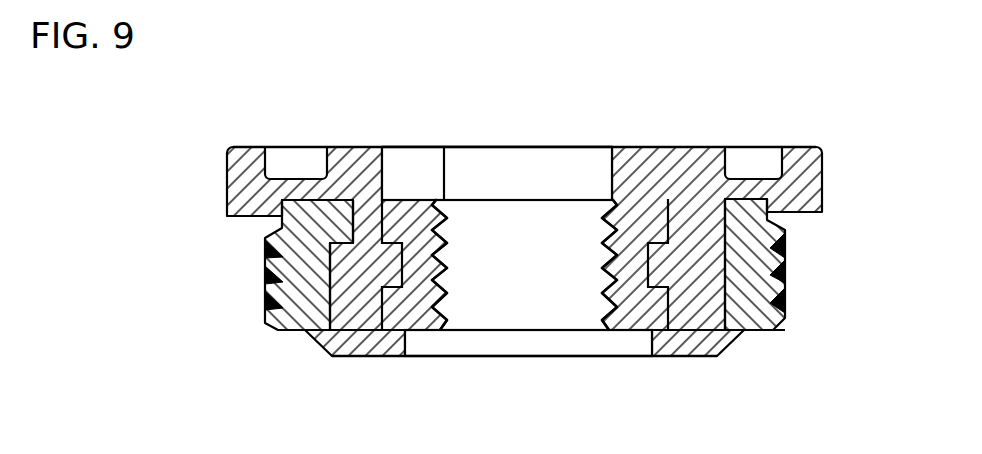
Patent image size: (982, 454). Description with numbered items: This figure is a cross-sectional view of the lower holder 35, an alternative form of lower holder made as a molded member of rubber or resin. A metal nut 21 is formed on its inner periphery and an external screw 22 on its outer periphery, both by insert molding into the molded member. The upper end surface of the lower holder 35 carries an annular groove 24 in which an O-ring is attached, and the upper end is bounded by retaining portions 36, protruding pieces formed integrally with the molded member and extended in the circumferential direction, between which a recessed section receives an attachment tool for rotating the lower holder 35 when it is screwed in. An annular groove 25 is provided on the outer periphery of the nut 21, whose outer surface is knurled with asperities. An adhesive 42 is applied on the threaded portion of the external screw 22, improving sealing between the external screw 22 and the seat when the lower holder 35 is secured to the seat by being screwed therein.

The nut 21 is at (497, 313).
The external screw 22 is at (750, 272).
The annular groove 24 is at (760, 147).
The annular groove 25 is at (658, 268).
The lower holder 35 is at (505, 147).
The retaining portions 36 is at (633, 147).
The adhesive 42 is at (265, 277).